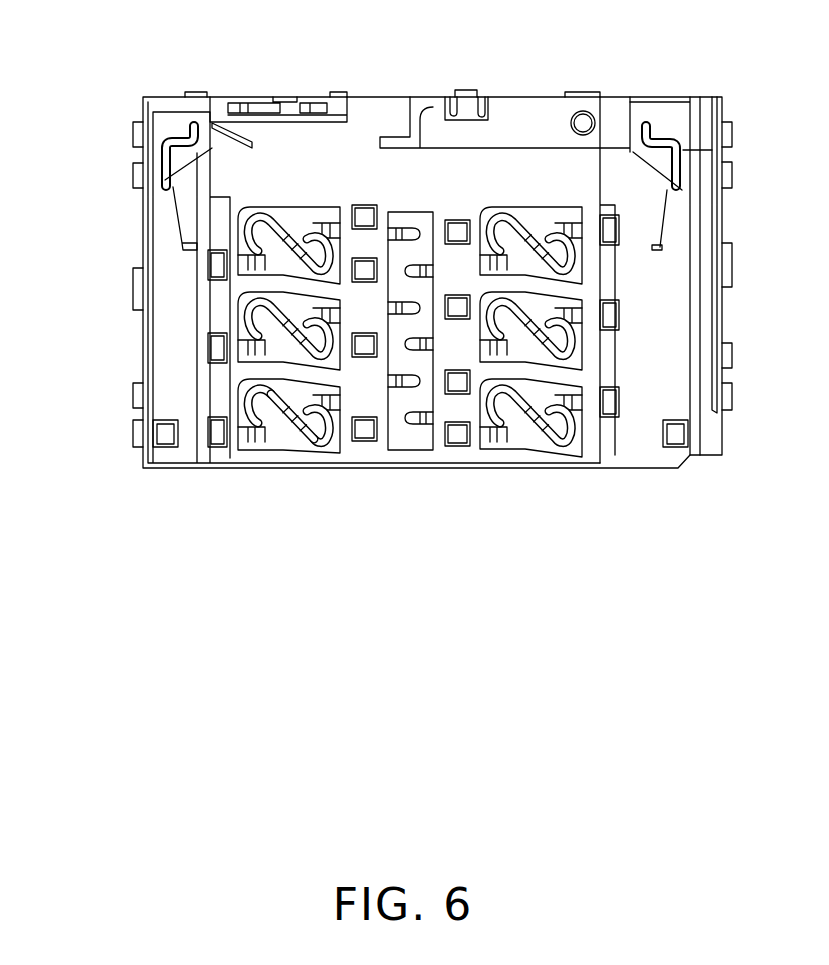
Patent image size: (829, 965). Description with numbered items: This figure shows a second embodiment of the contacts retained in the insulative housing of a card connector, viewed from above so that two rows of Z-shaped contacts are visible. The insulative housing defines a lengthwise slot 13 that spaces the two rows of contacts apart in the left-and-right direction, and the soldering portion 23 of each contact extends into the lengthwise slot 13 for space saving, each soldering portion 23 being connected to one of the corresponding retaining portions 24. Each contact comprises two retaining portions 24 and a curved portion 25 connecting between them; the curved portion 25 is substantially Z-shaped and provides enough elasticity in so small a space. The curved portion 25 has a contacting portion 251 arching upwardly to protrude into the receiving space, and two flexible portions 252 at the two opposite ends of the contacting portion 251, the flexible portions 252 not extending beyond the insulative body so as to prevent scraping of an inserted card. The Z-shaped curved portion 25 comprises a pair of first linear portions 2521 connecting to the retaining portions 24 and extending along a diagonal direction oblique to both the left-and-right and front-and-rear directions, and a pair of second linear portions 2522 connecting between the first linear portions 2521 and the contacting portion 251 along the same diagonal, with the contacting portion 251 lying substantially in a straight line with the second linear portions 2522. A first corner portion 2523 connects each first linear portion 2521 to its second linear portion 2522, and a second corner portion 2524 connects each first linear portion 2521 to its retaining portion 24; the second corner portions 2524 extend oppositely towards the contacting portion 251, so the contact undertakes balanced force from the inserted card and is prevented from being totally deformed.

The lengthwise slot 13 is at (497, 287).
The soldering portion 23 is at (413, 415).
The retaining portion 24 is at (242, 432).
The curved portion 25 is at (291, 545).
The contacting portion 251 is at (302, 432).
The flexible portion 252 is at (291, 511).
The first linear portion 2521 is at (260, 392).
The second linear portion 2522 is at (293, 430).
The first corner portion 2523 is at (276, 428).
The second corner portion 2524 is at (513, 427).